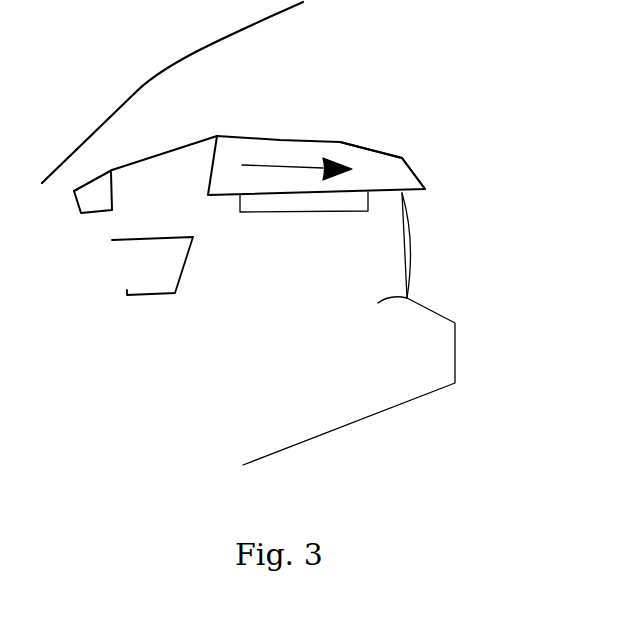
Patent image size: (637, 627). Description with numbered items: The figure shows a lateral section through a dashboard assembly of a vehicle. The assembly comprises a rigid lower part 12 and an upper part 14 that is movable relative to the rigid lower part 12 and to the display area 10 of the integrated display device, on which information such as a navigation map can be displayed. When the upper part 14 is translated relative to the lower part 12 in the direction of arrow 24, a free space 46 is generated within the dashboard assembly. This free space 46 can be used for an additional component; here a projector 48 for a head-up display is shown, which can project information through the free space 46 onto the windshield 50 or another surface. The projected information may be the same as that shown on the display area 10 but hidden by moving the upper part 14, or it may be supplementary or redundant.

The windshield 50 is at (183, 59).
The free space 46 is at (153, 177).
The arrow 24 is at (277, 167).
The upper part 14 is at (398, 170).
The display area 10 is at (408, 247).
The rigid lower part 12 is at (443, 348).
The projector 48 is at (160, 279).